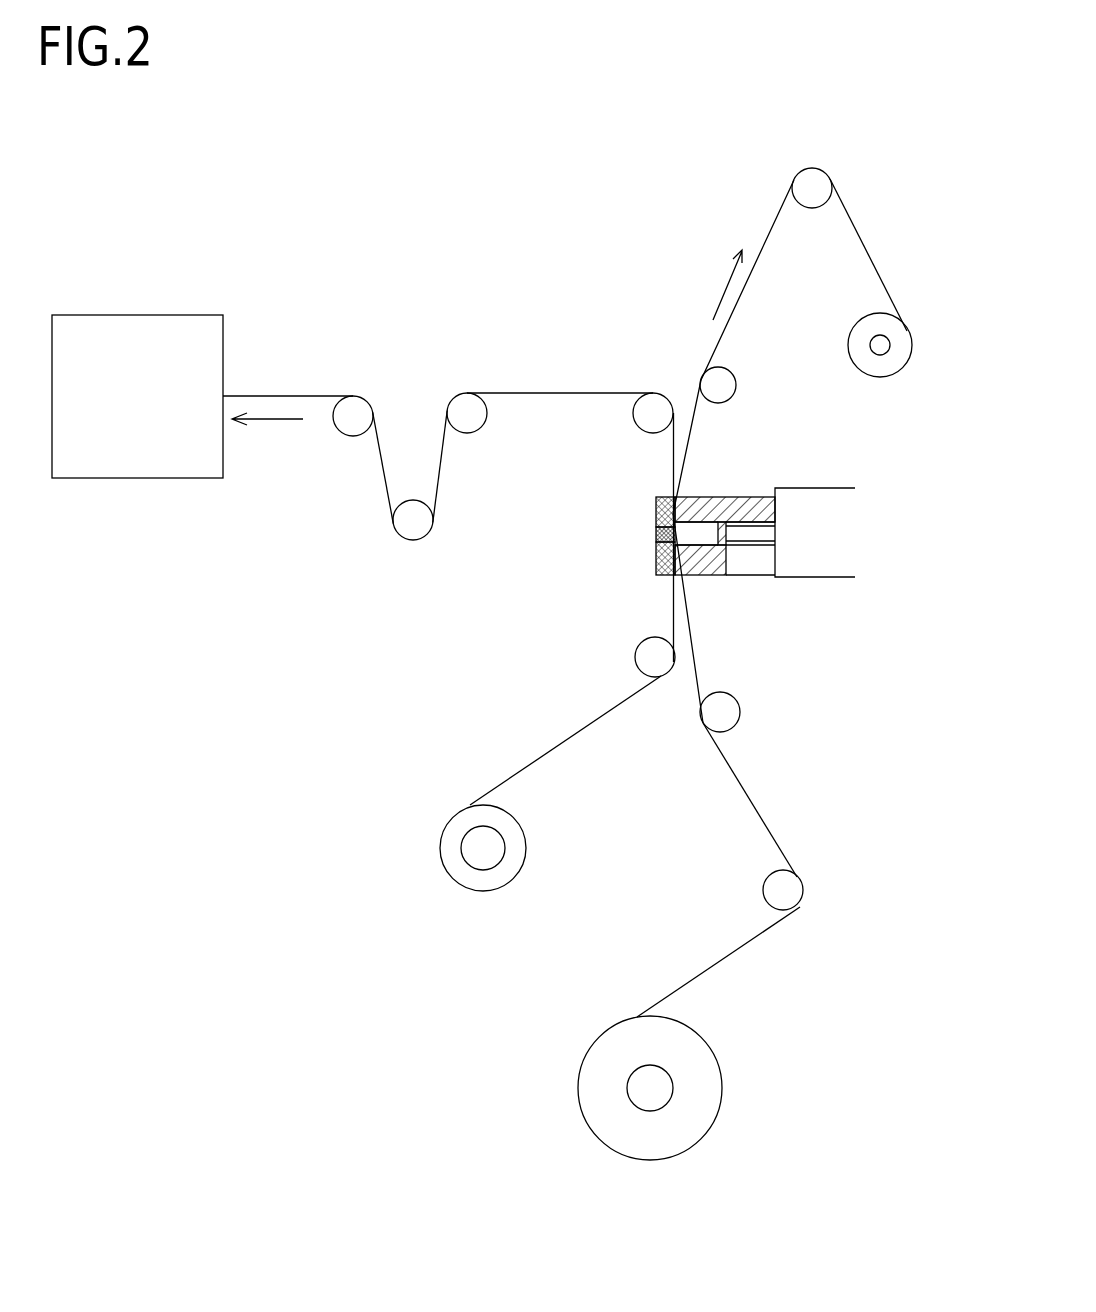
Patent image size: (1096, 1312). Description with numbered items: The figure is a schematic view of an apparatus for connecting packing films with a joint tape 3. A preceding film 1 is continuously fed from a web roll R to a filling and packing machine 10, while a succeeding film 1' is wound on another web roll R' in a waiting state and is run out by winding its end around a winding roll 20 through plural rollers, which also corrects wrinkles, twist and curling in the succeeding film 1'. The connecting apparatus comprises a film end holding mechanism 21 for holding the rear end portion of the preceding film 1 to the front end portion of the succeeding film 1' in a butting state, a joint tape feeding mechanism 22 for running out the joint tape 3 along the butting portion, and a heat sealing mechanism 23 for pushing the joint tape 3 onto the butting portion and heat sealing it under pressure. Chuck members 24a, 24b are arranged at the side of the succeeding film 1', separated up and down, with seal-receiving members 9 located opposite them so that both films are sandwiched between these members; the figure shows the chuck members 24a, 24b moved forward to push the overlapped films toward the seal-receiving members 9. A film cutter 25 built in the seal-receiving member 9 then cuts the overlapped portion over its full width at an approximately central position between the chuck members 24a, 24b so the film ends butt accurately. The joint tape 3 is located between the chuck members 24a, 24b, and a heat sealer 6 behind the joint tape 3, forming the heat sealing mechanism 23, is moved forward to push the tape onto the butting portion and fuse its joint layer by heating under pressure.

The filling and packing machine 10 is at (223, 315).
The preceding film 1 is at (449, 599).
The succeeding film 1' is at (734, 592).
The web roll R is at (507, 841).
The web roll R' is at (665, 1074).
The winding roll 20 is at (848, 346).
The film end holding mechanism 21 is at (717, 527).
The seal-receiving member 9 is at (656, 504).
The film cutter 25 is at (656, 536).
The chuck member 24a is at (697, 497).
The chuck member 24b is at (705, 575).
The heat sealer 6 is at (750, 518).
The joint tape 3 is at (727, 548).
The joint tape feeding mechanism 22 is at (780, 579).
The heat sealing mechanism 23 is at (795, 483).